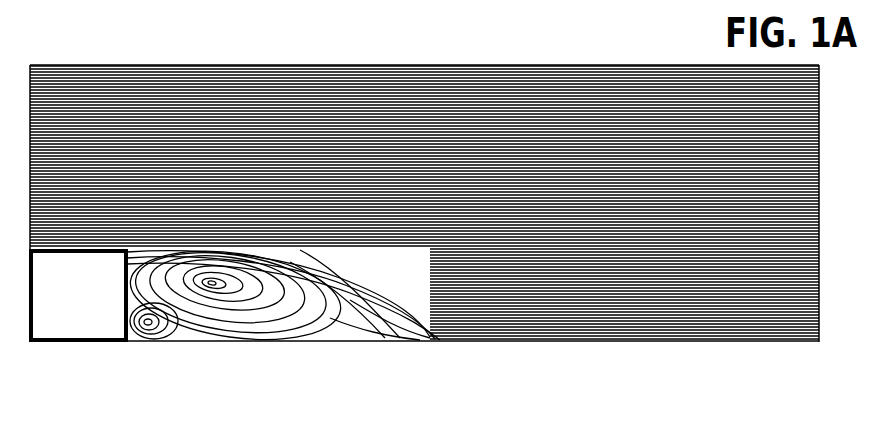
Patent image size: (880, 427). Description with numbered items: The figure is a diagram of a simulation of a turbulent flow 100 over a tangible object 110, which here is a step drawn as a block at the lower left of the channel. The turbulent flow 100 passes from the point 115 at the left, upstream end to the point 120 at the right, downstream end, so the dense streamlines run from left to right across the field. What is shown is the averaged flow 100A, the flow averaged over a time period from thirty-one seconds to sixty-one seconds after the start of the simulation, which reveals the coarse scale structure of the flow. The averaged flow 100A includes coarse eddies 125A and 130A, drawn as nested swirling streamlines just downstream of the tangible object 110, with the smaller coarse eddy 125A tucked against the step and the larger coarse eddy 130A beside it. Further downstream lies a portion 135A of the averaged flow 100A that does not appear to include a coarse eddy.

The turbulent flow 100 is at (470, 50).
The averaged flow 100A is at (180, 63).
The tangible object 110 is at (98, 344).
The point 115 is at (32, 347).
The point 120 is at (813, 352).
The coarse eddy 125A is at (150, 348).
The coarse eddy 130A is at (243, 348).
The portion of the averaged flow 135A is at (585, 350).